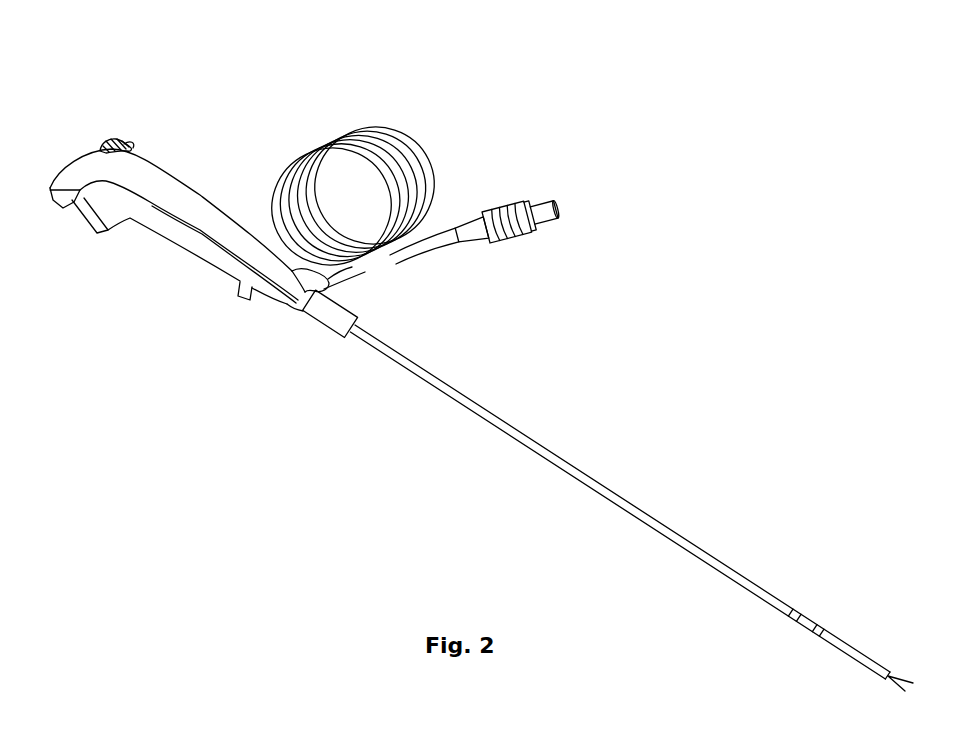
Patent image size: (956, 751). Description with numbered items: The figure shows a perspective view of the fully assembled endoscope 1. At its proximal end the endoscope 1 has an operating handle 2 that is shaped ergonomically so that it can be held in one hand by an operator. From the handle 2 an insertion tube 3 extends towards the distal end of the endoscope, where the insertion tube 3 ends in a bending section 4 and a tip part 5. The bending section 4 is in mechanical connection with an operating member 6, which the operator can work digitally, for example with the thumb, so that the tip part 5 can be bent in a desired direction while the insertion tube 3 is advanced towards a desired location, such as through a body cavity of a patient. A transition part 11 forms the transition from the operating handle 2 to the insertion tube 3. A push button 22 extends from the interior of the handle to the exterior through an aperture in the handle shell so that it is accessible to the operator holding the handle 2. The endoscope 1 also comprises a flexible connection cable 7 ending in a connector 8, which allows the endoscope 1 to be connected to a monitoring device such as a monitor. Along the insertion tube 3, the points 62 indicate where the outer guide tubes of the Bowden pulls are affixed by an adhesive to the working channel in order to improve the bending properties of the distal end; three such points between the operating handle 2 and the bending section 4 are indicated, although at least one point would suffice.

The endoscope 1 is at (257, 448).
The operating handle 2 is at (180, 128).
The insertion tube 3 is at (758, 560).
The bending section 4 is at (848, 640).
The tip part 5 is at (892, 670).
The operating member 6 is at (118, 136).
The flexible connection cable 7 is at (414, 142).
The connector 8 is at (520, 231).
The transition part 11 is at (332, 330).
The push button 22 is at (82, 228).
The points where the guide tube is affixed to the working channel 62 is at (437, 402).